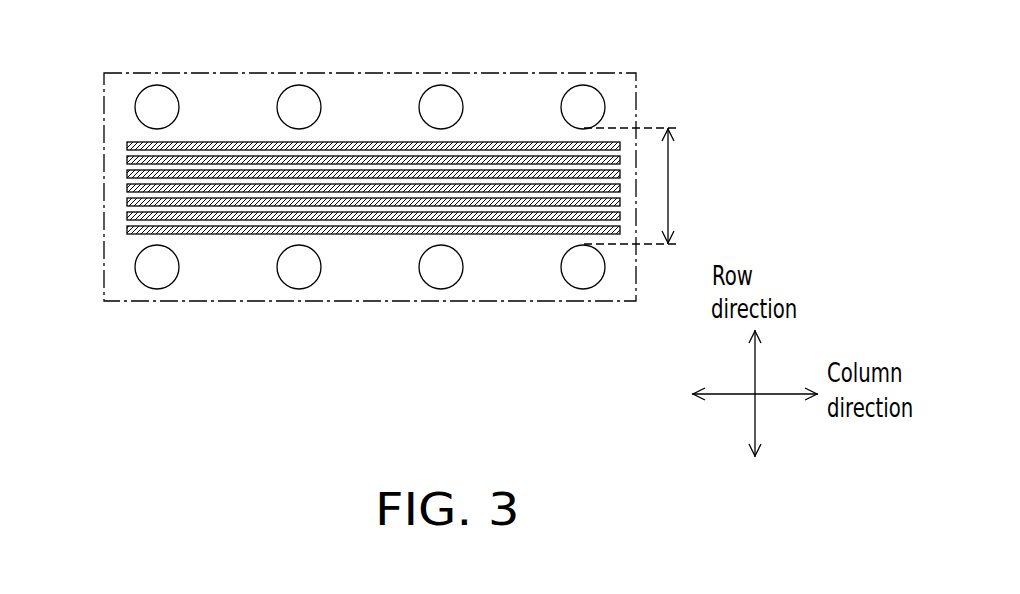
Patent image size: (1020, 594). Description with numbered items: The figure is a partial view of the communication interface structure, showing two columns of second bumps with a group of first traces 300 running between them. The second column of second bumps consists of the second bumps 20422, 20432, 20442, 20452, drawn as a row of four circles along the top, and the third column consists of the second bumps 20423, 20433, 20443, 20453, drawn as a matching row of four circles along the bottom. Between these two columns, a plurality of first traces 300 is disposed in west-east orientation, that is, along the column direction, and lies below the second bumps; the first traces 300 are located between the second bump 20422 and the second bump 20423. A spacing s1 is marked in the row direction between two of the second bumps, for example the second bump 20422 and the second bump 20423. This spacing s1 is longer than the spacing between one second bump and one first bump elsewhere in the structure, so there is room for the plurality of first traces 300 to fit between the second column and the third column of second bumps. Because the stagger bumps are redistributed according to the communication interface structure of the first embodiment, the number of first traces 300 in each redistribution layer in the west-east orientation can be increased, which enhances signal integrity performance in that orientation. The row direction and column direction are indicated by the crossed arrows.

The first traces 300 is at (97, 143).
The second bump 20422 is at (148, 68).
The second bump 20432 is at (290, 68).
The second bump 20442 is at (432, 68).
The second bump 20452 is at (574, 68).
The second bump 20423 is at (148, 309).
The second bump 20433 is at (290, 309).
The second bump 20443 is at (432, 309).
The second bump 20453 is at (574, 309).
The spacing s1 is at (644, 186).